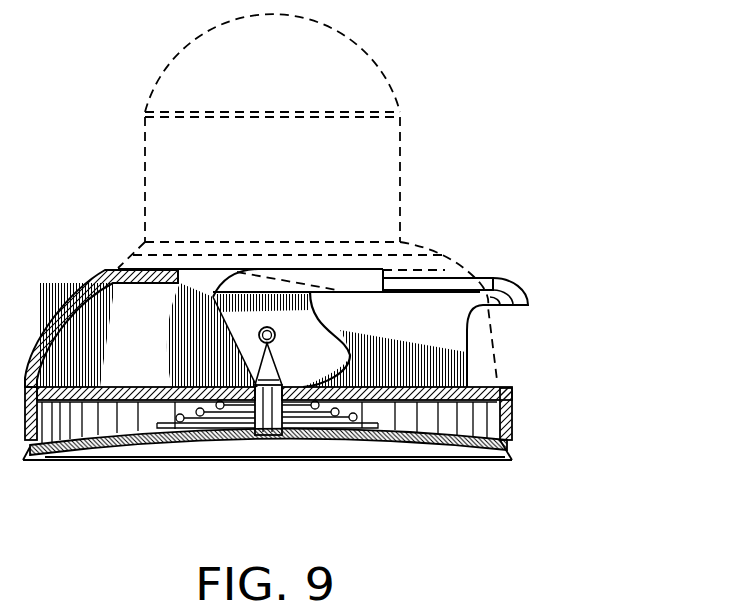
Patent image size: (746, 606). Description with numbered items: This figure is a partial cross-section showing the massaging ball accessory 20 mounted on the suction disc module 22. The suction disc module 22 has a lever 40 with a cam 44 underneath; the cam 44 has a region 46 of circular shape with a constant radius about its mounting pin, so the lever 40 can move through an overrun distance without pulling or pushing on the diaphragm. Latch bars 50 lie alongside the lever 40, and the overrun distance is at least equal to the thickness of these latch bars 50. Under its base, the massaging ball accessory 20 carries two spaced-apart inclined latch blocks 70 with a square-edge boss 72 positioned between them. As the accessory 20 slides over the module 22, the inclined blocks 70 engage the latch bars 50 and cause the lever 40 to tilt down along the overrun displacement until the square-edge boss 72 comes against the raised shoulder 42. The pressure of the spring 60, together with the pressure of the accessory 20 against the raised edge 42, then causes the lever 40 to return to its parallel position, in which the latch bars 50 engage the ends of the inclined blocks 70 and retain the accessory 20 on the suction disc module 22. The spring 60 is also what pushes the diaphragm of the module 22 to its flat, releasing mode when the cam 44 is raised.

The massaging ball accessory 20 is at (145, 147).
The suction disc module 22 is at (77, 302).
The lever 40 is at (523, 290).
The raised shoulder 42 is at (268, 262).
The cam 44 is at (338, 359).
The region of circular shape 46 is at (256, 428).
The latch bars 50 is at (428, 278).
The spring 60 is at (332, 417).
The inclined latch blocks 70 is at (335, 283).
The square-edge boss 72 is at (283, 270).